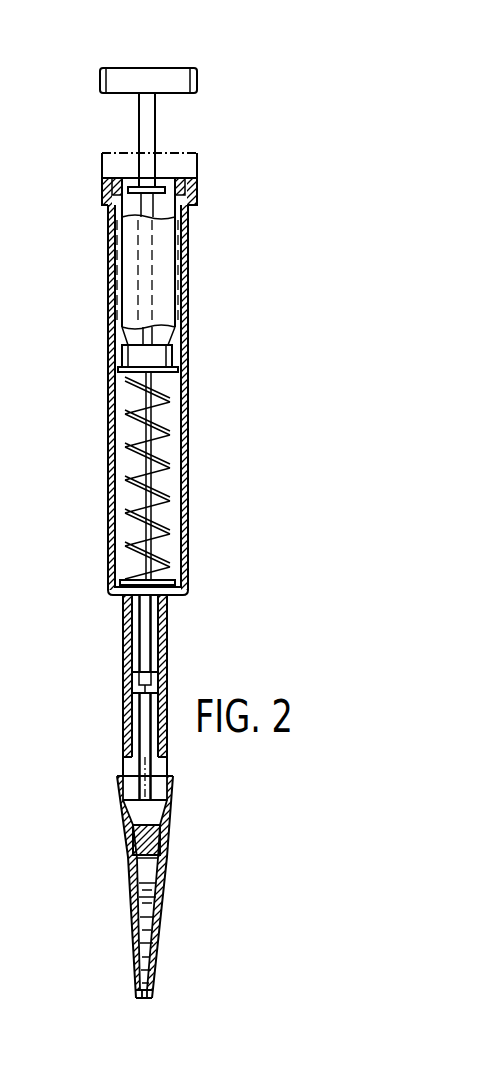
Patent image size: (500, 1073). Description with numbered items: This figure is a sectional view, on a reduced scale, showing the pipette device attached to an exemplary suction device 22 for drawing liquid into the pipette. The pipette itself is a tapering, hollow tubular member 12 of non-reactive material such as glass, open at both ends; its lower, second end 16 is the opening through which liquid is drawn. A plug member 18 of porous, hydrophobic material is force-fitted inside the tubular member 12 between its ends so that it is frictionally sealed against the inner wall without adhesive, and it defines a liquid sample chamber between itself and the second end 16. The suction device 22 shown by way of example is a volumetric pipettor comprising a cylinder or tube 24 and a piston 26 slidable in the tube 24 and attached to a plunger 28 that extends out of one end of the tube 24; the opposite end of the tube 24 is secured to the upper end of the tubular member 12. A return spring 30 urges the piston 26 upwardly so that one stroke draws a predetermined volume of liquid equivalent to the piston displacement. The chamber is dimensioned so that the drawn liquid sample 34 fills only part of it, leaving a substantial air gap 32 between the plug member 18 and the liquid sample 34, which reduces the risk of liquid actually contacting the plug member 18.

The tubular member 12 is at (146, 906).
The second end 16 is at (145, 998).
The plug member 18 is at (160, 835).
The suction device 22 is at (131, 411).
The tube 24 is at (110, 292).
The piston 26 is at (132, 677).
The plunger 28 is at (173, 68).
The return spring 30 is at (163, 453).
The air gap 32 is at (148, 868).
The drawn liquid sample 34 is at (143, 900).